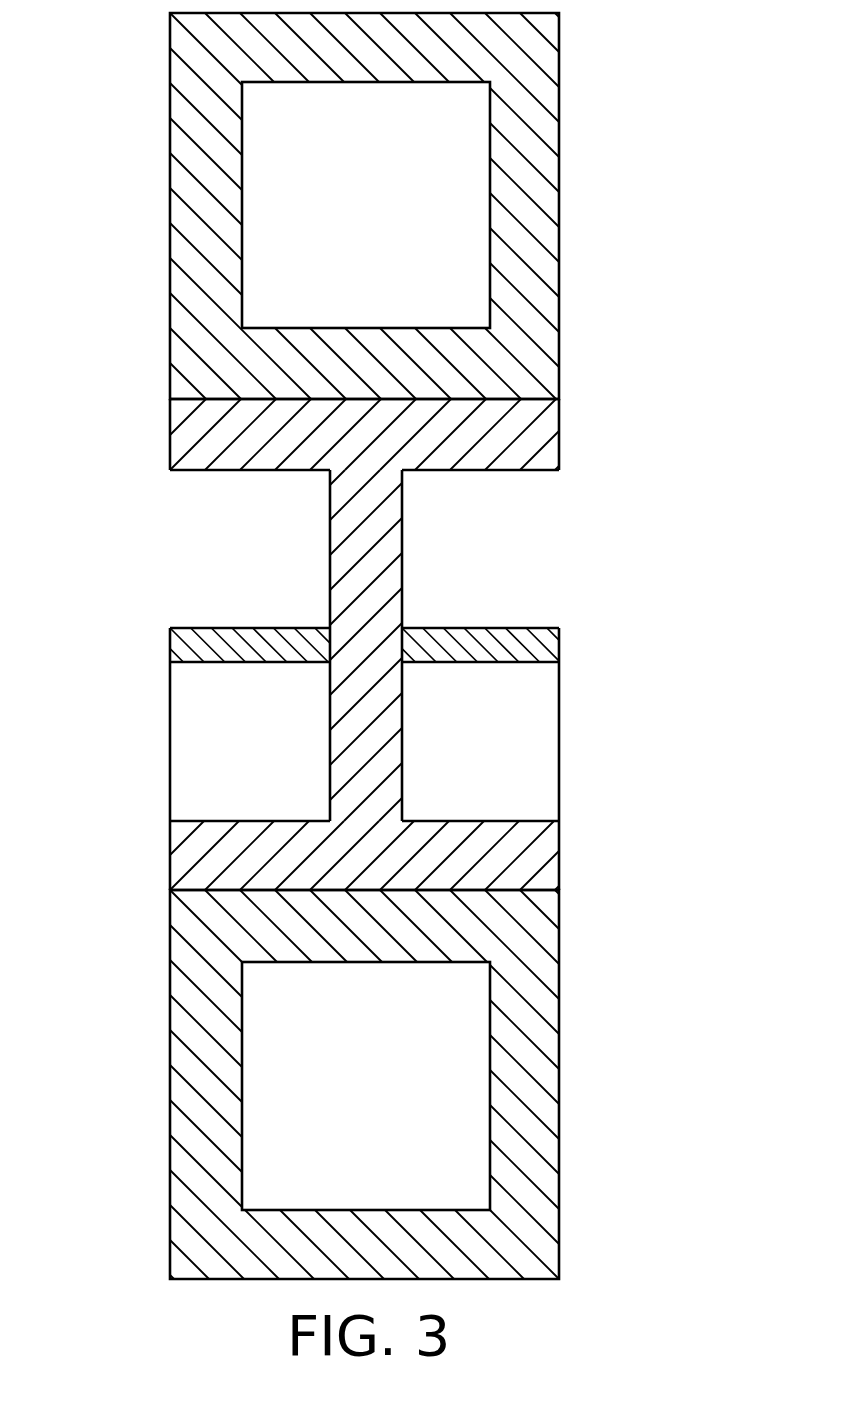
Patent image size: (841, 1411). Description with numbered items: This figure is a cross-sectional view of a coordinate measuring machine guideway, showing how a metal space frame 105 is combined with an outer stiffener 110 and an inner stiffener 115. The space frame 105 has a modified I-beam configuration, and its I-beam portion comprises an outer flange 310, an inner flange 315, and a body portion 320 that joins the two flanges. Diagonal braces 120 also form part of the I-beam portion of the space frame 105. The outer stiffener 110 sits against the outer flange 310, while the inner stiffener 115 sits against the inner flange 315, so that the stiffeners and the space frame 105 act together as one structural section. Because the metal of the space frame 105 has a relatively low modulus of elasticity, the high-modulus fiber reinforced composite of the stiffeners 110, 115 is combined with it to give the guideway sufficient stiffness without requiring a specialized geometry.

The space frame 105 is at (410, 644).
The outer stiffener 110 is at (560, 233).
The inner stiffener 115 is at (560, 971).
The diagonal braces 120 is at (192, 627).
The outer flange 310 is at (135, 400).
The inner flange 315 is at (135, 822).
The body portion 320 is at (330, 543).